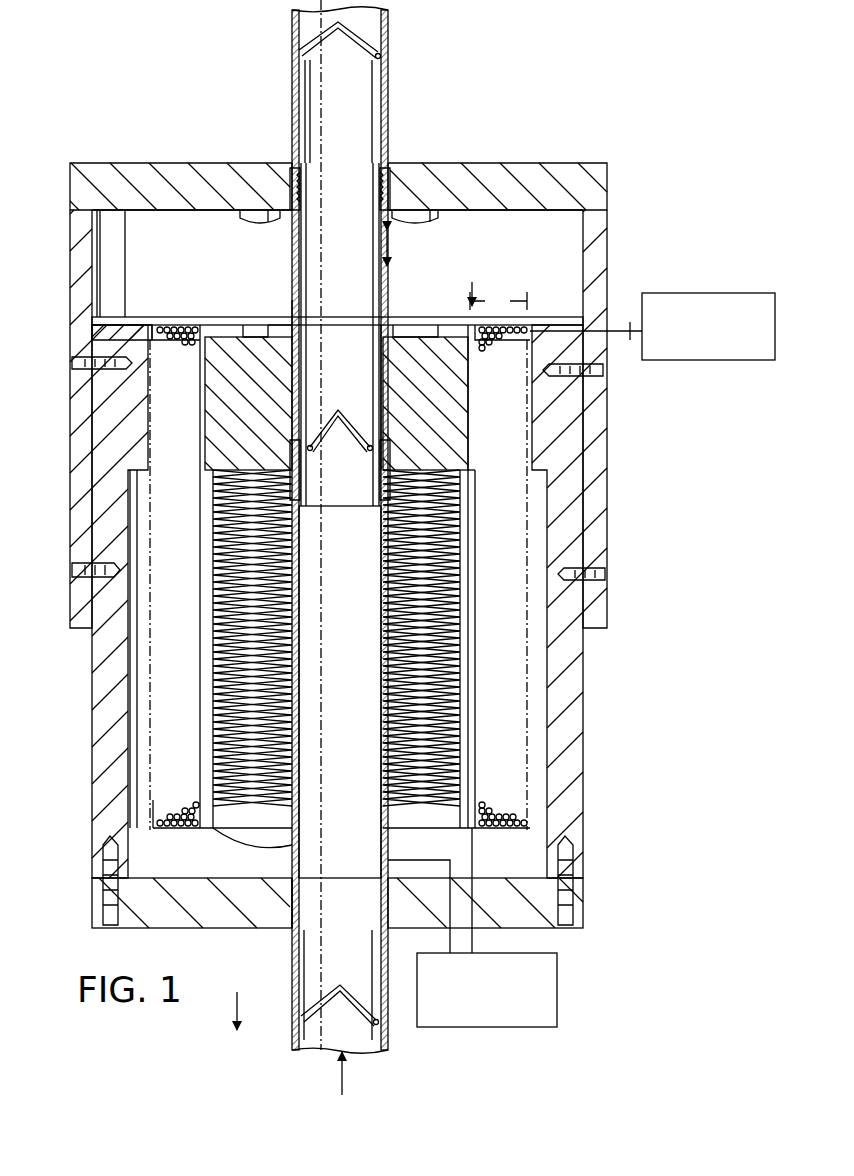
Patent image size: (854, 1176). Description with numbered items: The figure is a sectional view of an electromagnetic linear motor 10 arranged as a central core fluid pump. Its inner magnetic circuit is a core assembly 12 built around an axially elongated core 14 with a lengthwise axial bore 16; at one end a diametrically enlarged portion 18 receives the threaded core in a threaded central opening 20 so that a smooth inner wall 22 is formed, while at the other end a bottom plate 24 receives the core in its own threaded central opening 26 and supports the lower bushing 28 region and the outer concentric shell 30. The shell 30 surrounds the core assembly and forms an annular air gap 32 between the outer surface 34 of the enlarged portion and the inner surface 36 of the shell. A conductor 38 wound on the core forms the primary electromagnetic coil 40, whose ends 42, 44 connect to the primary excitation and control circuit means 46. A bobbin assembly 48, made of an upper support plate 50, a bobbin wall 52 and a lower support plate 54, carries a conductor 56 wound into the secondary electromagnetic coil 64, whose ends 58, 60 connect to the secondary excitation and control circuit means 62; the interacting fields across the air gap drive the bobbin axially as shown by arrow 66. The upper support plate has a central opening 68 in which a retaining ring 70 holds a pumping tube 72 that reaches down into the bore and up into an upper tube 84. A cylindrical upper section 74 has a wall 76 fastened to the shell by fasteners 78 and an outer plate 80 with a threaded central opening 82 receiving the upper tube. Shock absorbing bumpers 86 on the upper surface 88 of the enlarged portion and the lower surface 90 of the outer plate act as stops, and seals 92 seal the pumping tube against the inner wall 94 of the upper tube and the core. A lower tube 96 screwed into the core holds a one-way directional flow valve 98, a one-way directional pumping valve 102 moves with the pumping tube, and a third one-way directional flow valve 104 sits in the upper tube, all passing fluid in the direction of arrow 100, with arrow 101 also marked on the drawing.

The electromagnetic motor 10 is at (462, 108).
The core assembly 12 is at (210, 322).
The core 14 is at (368, 595).
The axial bore 16 is at (347, 693).
The enlarged portion 18 is at (426, 335).
The threaded central opening 20 is at (298, 468).
The inner wall 22 is at (381, 345).
The bottom plate 24 is at (200, 915).
The threaded central opening 26 is at (290, 915).
The lower bushing 28 is at (302, 905).
The outer concentric shell 30 is at (585, 730).
The annular air gap 32 is at (498, 300).
The outer surface 34 is at (470, 444).
The inner surface 36 is at (482, 392).
The conductor 38 is at (470, 852).
The electromagnetic coil 40 is at (240, 843).
The conductor end 42 is at (447, 944).
The conductor end 44 is at (475, 945).
The primary excitation and control circuit means 46 is at (557, 960).
The bobbin assembly 48 is at (470, 281).
The upper support plate 50 is at (135, 314).
The bobbin wall 52 is at (200, 520).
The lower support plate 54 is at (172, 832).
The conductor 56 is at (600, 330).
The conductor end 58 is at (630, 322).
The conductor end 60 is at (628, 340).
The secondary excitation and control circuit means 62 is at (735, 293).
The secondary electromagnetic coil 64 is at (183, 800).
The arrow 66 is at (406, 252).
The central opening 68 is at (295, 306).
The retaining ring 70 is at (288, 310).
The pumping tube 72 is at (300, 256).
The upper section 74 is at (618, 192).
The wall 76 is at (600, 252).
The fasteners 78 is at (88, 362).
The outer plate 80 is at (483, 176).
The threaded central opening 82 is at (392, 176).
The upper tube 84 is at (390, 76).
The shock absorbing bumpers 86 is at (248, 218).
The upper surface 88 is at (218, 314).
The lower surface 90 is at (512, 212).
The seals 92 is at (303, 210).
The inner wall 94 is at (380, 102).
The lower tube 96 is at (292, 980).
The one-way directional flow valve 98 is at (352, 1002).
The arrow 100 is at (345, 1082).
The flow arrow 101 is at (237, 992).
The one-way directional pumping valve 102 is at (348, 406).
The one-way directional flow valve 104 is at (376, 45).